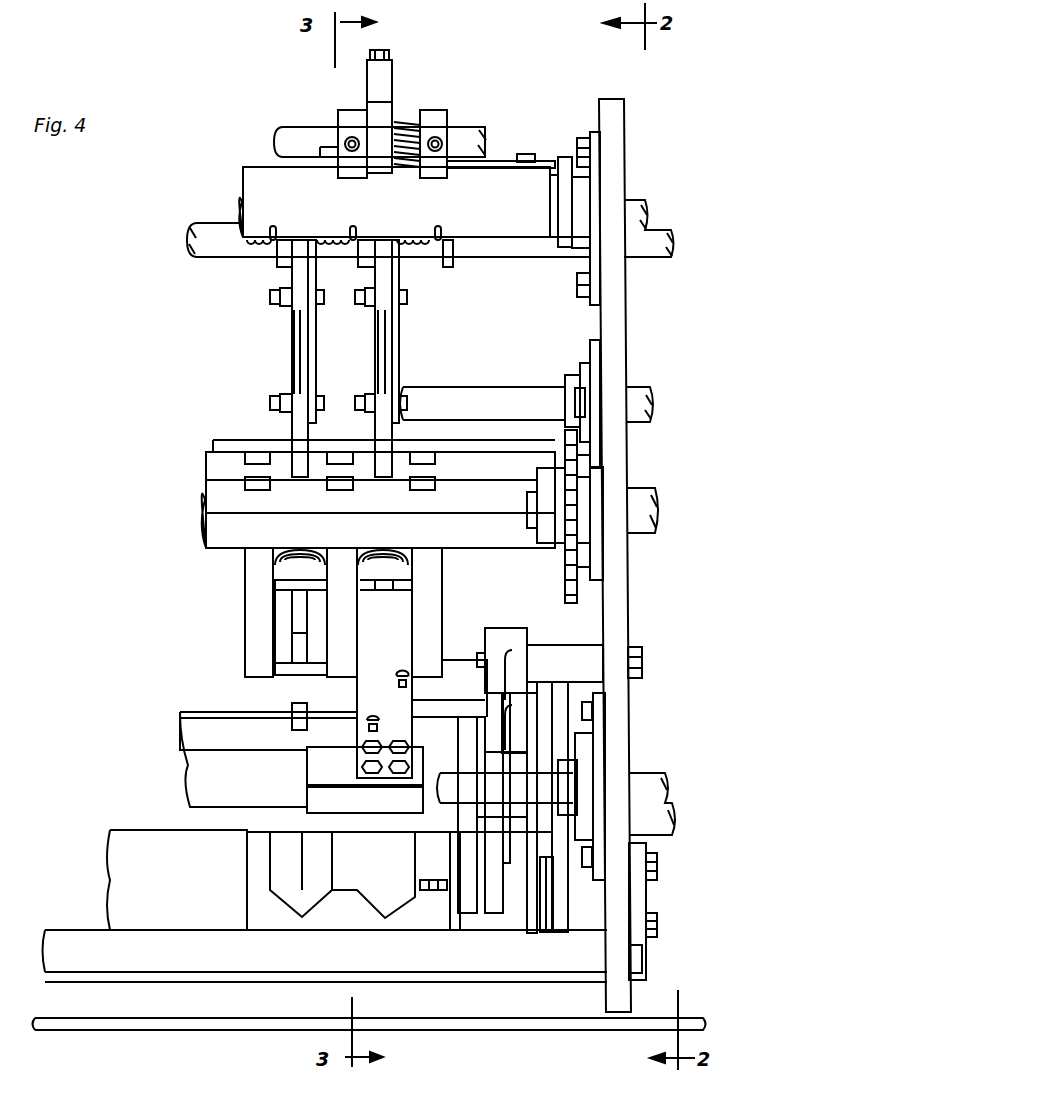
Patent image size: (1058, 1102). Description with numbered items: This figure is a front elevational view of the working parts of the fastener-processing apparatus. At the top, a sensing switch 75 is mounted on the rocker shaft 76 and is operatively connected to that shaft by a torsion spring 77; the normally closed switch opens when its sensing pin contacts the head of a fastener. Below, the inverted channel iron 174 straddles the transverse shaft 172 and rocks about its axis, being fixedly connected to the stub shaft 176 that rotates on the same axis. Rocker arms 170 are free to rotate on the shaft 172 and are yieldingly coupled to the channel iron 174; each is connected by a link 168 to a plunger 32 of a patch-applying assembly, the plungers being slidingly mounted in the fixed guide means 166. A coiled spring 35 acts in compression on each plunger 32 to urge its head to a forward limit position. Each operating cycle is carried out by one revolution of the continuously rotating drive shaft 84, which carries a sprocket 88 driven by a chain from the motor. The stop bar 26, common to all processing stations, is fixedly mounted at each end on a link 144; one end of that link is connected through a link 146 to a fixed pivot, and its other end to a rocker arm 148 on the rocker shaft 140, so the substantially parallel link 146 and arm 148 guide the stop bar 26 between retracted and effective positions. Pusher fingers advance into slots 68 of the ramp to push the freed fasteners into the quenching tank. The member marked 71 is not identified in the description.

The sensing switch 75 is at (383, 75).
The torsion spring 77 is at (405, 122).
The rocker shaft 76 is at (463, 135).
The inverted channel iron 174 is at (398, 203).
The stub shaft 176 is at (634, 205).
The transverse shaft 172 is at (505, 250).
The rocker arm 170 is at (297, 290).
The link 168 is at (385, 355).
The plunger 32 is at (388, 437).
The fixed guide means 166 is at (378, 494).
The drive shaft 84 is at (640, 515).
The sprocket 88 is at (563, 583).
The coiled spring 35 is at (408, 563).
The link 146 is at (492, 707).
The frame 71 is at (365, 680).
The stop bar 26 is at (222, 712).
The rocker shaft 140 is at (642, 775).
The slot 68 is at (398, 918).
The link 144 is at (467, 903).
The rocker arm 148 is at (493, 903).